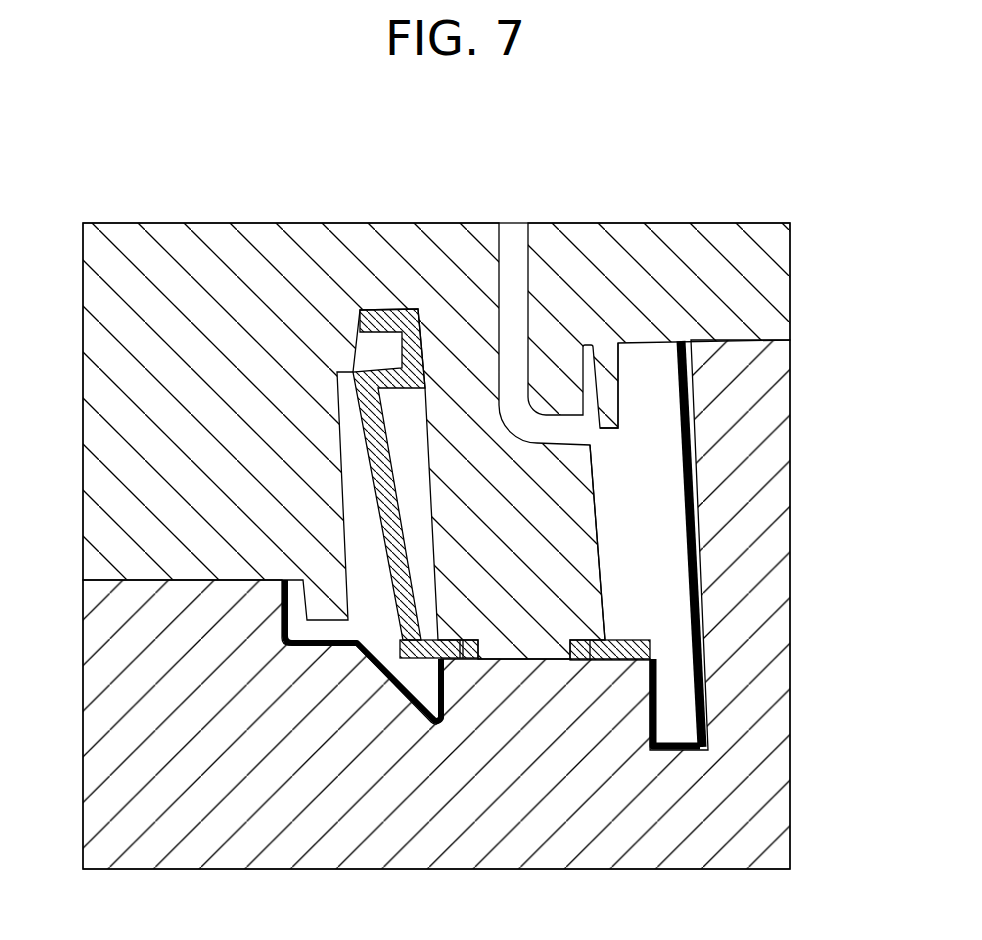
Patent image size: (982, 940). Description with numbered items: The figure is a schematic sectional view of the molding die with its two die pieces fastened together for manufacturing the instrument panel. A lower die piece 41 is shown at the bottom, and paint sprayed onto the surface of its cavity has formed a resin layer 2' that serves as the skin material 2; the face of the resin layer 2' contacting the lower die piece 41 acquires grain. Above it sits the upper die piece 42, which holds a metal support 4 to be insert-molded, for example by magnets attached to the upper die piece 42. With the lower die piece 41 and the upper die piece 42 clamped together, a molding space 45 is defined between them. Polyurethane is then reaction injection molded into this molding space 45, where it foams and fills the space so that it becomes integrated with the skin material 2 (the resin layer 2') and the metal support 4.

The lower die piece 41 is at (760, 827).
The upper die piece 42 is at (677, 243).
The molding space 45 is at (642, 495).
The resin layer 2' is at (234, 515).
The skin material 2 is at (758, 544).
The metal support 4 is at (592, 660).